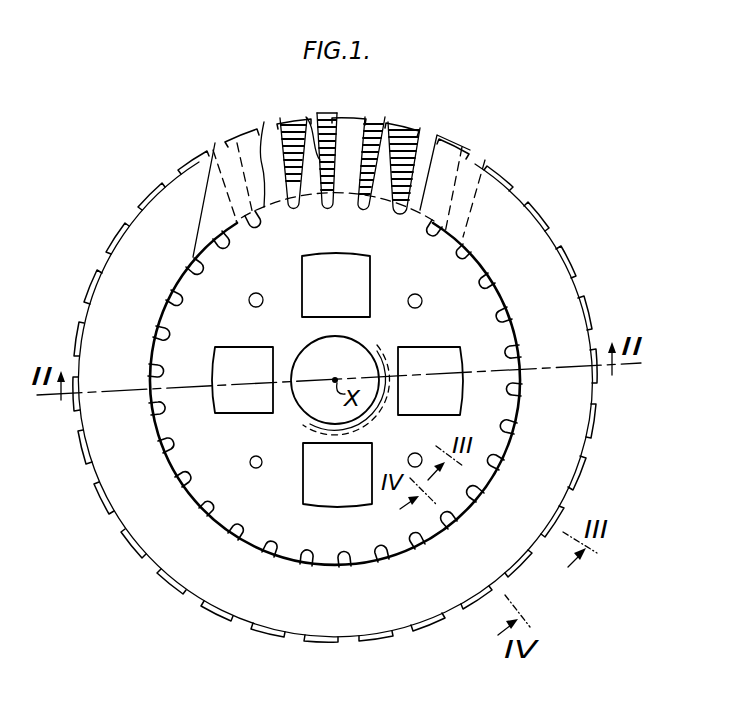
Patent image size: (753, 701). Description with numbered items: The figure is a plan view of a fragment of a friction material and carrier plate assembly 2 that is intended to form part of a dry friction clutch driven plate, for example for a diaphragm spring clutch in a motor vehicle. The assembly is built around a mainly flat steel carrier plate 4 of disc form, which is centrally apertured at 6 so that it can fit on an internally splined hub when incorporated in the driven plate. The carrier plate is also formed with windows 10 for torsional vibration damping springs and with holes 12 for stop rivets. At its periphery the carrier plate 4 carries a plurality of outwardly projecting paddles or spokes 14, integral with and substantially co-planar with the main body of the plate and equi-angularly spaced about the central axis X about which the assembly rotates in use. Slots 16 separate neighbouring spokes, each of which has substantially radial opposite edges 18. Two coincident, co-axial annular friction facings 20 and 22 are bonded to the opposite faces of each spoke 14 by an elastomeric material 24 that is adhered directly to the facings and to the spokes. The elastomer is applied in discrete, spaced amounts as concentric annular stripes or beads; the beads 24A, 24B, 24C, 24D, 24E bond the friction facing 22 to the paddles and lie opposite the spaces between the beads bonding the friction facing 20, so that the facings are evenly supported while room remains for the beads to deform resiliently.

The friction material and carrier plate assembly 2 is at (590, 277).
The carrier plate 4 is at (230, 311).
The central aperture 6 is at (358, 352).
The windows 10 is at (250, 400).
The holes 12 is at (257, 468).
The spokes 14 is at (293, 113).
The slots 16 is at (292, 210).
The radial opposite edges 18 is at (262, 222).
The annular friction facing 20 is at (543, 237).
The annular friction facing 22 is at (428, 132).
The elastomeric material 24 is at (330, 122).
The stripe or bead 24A is at (333, 195).
The stripe or bead 24B is at (307, 117).
The stripe or bead 24C is at (390, 127).
The stripe or bead 24D is at (353, 80).
The stripe or bead 24E is at (330, 150).